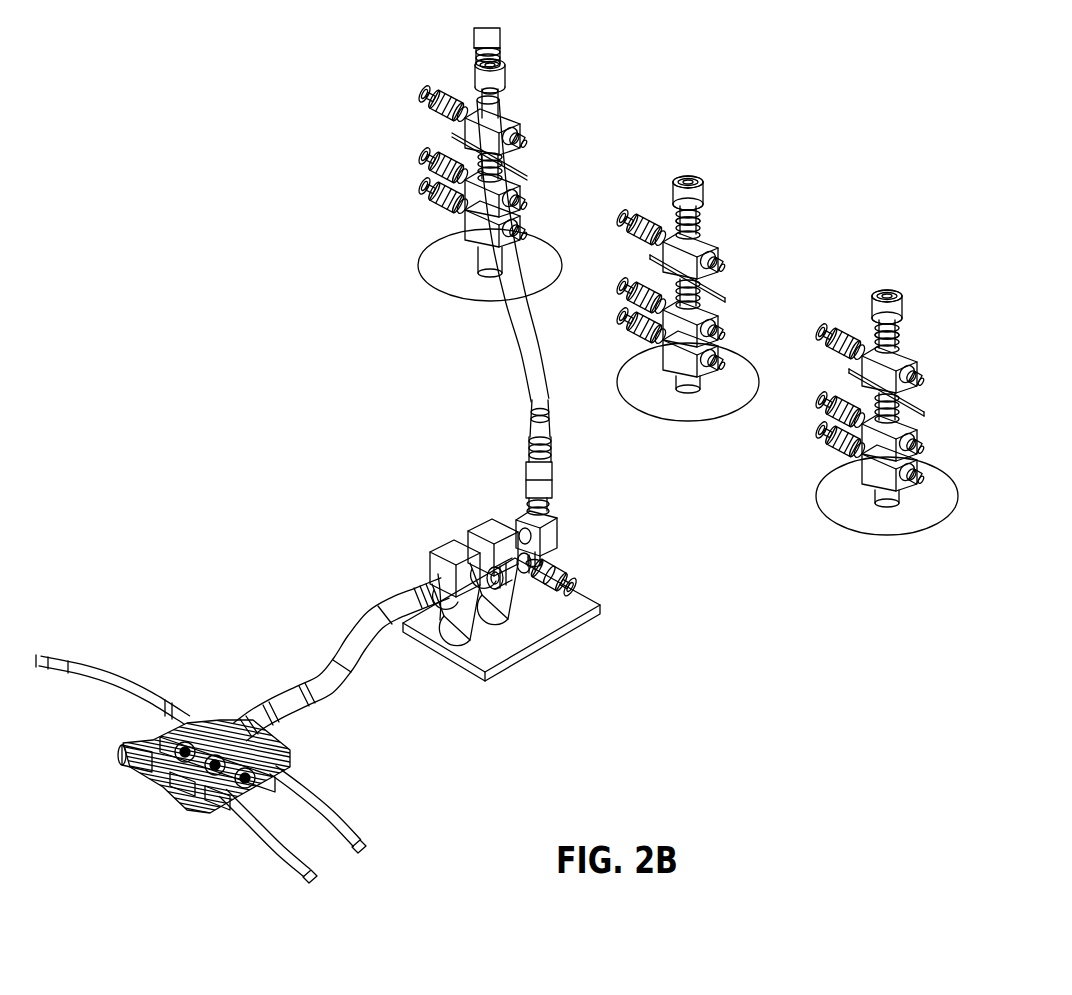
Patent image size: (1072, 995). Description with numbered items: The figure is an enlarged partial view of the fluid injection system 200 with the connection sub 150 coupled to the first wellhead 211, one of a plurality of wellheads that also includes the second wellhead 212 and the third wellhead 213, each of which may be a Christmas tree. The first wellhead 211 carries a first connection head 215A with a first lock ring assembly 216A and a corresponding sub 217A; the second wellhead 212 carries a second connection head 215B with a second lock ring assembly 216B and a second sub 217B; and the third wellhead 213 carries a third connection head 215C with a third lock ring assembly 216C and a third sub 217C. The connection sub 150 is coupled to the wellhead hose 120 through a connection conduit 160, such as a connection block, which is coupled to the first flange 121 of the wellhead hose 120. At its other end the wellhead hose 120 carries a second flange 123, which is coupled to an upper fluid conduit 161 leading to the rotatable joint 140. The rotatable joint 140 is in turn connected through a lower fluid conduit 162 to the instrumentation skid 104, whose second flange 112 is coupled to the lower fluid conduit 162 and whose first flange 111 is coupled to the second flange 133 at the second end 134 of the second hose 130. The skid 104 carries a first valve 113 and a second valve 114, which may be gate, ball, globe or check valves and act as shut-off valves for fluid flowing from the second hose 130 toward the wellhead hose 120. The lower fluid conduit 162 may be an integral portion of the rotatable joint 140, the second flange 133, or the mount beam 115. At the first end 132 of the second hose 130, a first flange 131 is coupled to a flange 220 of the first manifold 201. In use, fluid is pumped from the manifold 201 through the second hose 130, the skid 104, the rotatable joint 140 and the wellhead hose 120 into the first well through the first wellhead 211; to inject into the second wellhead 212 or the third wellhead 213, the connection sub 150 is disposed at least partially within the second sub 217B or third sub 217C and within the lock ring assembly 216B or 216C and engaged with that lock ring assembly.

The fluid injection system 200 is at (216, 126).
The instrumentation skid 104 is at (532, 676).
The first flange 111 is at (436, 560).
The second flange 112 is at (520, 536).
The first valve 113 is at (484, 643).
The second valve 114 is at (545, 632).
The mount beam 115 is at (548, 555).
The wellhead hose 120 is at (517, 328).
The first flange 121 is at (476, 53).
The second flange 123 is at (550, 450).
The second hose 130 is at (340, 640).
The first flange 131 is at (252, 716).
The first end 132 is at (278, 741).
The second flange 133 is at (440, 620).
The second end 134 is at (396, 574).
The rotatable joint 140 is at (582, 517).
The connection sub 150 is at (502, 60).
The connection conduit 160 is at (495, 35).
The upper fluid conduit 161 is at (537, 462).
The lower fluid conduit 162 is at (558, 530).
The first manifold 201 is at (207, 771).
The first wellhead 211 is at (522, 137).
The second wellhead 212 is at (735, 188).
The third wellhead 213 is at (888, 272).
The first connection head 215A is at (506, 96).
The second connection head 215B is at (714, 210).
The third connection head 215C is at (862, 326).
The first lock ring assembly 216A is at (504, 80).
The second lock ring assembly 216B is at (690, 180).
The third lock ring assembly 216C is at (906, 300).
The threaded fitting 217A is at (505, 105).
The second sub 217B is at (704, 218).
The third sub 217C is at (900, 336).
The flange 220 is at (242, 728).